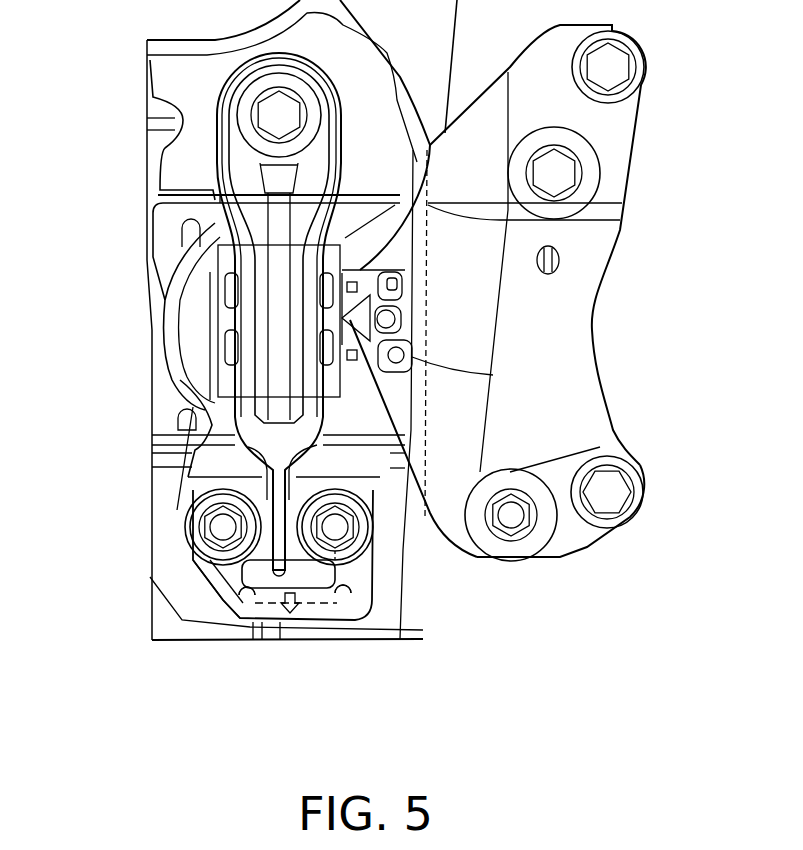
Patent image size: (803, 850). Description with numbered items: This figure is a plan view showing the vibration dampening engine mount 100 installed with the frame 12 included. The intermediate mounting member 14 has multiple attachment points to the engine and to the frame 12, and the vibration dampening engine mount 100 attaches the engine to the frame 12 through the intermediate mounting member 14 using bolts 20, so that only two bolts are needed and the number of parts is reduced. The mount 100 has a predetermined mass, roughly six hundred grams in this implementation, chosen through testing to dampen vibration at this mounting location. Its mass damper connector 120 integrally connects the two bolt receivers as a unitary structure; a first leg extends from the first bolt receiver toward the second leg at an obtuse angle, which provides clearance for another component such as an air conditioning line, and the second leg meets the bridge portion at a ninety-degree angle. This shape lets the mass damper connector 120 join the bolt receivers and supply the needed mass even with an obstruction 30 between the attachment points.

The frame 12 is at (200, 91).
The intermediate mounting member 14 is at (543, 388).
The bolts 20 is at (222, 527).
The obstruction 30 is at (273, 494).
The vibration dampening engine mount 100 is at (200, 593).
The mass damper connector 120 is at (272, 612).